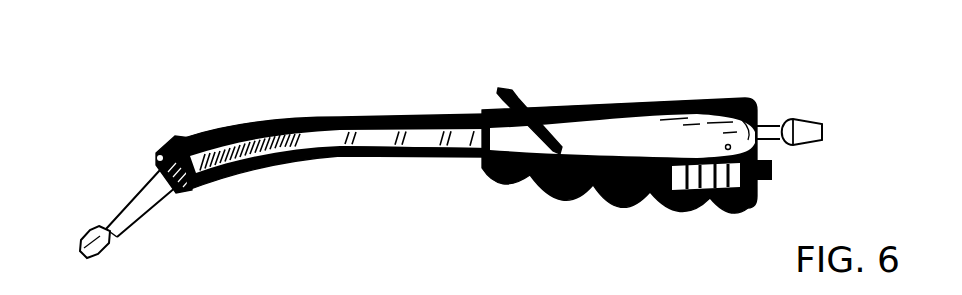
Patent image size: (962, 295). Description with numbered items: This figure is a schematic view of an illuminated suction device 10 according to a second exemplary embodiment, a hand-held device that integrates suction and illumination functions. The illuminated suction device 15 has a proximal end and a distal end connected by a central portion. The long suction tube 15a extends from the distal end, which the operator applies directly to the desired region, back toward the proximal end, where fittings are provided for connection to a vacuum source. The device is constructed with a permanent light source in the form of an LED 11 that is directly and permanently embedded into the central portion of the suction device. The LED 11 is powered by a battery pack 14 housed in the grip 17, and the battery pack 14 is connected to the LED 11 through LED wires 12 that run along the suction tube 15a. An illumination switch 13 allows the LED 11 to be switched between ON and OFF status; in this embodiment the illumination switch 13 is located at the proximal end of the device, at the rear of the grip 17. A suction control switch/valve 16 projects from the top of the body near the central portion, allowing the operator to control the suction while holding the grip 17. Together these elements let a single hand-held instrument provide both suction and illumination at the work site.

The suction device 10 is at (40, 92).
The LED 11 is at (147, 153).
The LED wires 12 is at (327, 108).
The illumination switch 13 is at (782, 172).
The battery pack 14 is at (714, 203).
The suction device 15 is at (442, 162).
The suction tube 15a is at (297, 148).
The suction control switch/valve 16 is at (521, 92).
The grip 17 is at (590, 195).